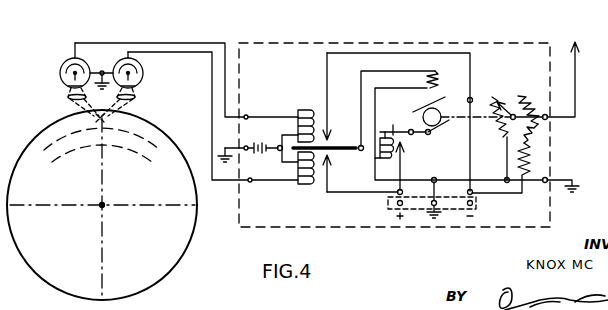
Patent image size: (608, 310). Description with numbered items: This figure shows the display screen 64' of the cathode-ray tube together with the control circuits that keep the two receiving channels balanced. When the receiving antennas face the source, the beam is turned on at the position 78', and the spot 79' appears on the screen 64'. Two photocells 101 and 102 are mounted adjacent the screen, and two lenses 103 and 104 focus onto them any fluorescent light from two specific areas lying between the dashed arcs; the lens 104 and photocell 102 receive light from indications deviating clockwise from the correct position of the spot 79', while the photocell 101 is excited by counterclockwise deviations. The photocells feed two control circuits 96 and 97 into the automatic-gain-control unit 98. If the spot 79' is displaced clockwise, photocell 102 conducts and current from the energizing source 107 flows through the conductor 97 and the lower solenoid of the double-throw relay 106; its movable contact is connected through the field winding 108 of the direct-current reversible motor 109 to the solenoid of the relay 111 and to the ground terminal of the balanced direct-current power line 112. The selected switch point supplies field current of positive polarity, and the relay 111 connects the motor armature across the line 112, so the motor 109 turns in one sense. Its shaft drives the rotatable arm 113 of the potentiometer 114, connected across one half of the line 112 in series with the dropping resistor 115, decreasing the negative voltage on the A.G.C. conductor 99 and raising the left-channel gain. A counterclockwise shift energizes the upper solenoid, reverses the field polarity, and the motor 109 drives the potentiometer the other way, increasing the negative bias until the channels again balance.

The display screen 64' is at (102, 209).
The beam position 78' is at (127, 193).
The spot 79' is at (102, 138).
The control circuit 96 is at (181, 43).
The control circuit 97 is at (162, 52).
The automatic-gain-control unit 98 is at (378, 43).
The control circuit 99 is at (577, 94).
The photocell 101 is at (70, 70).
The photocell 102 is at (141, 74).
The lens 103 is at (68, 97).
The lens 104 is at (135, 97).
The double-throw relay 106 is at (316, 128).
The energizing source 107 is at (271, 143).
The field winding 108 is at (430, 86).
The direct-current reversible motor 109 is at (423, 112).
The relay 111 is at (386, 135).
The balanced direct-current power line 112 is at (388, 205).
The rotatable arm 113 is at (503, 106).
The potentiometer 114 is at (542, 86).
The dropping resistor 115 is at (528, 150).